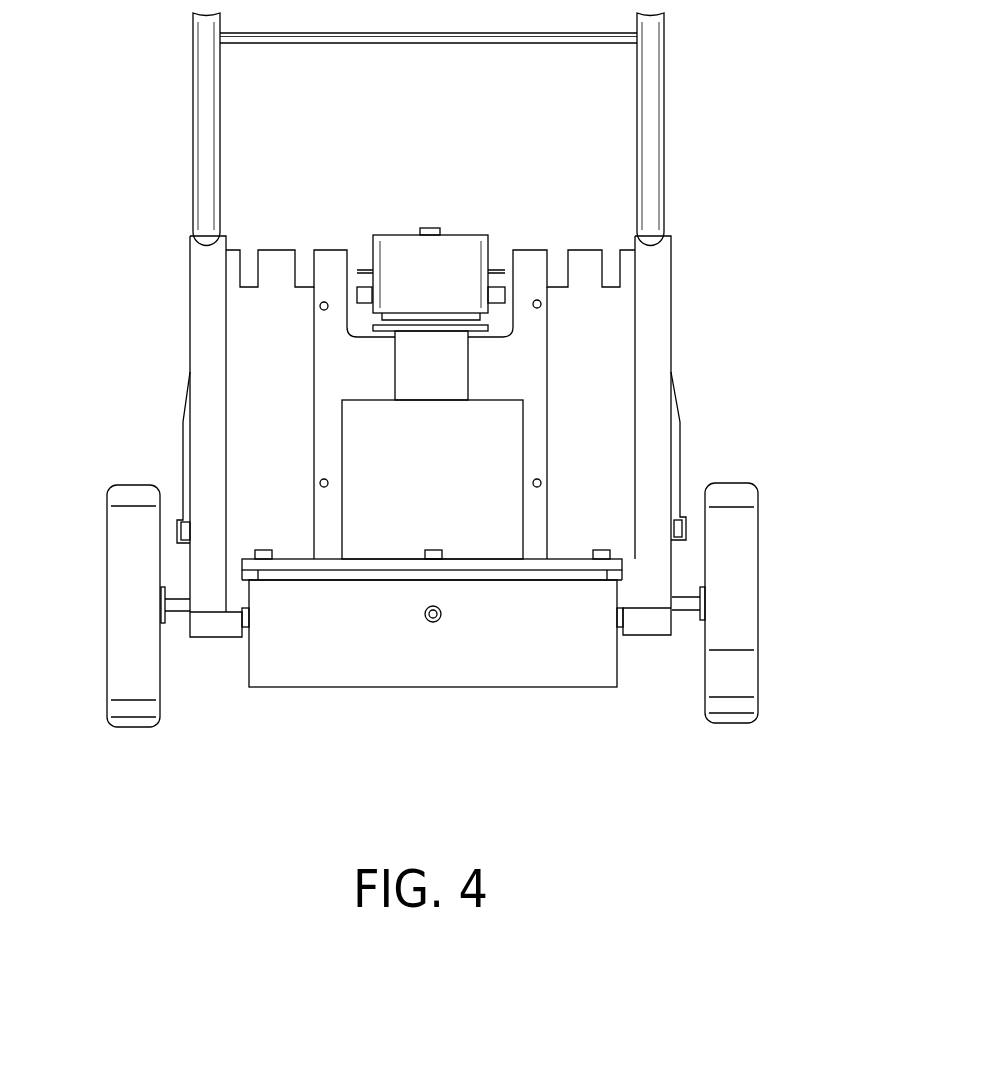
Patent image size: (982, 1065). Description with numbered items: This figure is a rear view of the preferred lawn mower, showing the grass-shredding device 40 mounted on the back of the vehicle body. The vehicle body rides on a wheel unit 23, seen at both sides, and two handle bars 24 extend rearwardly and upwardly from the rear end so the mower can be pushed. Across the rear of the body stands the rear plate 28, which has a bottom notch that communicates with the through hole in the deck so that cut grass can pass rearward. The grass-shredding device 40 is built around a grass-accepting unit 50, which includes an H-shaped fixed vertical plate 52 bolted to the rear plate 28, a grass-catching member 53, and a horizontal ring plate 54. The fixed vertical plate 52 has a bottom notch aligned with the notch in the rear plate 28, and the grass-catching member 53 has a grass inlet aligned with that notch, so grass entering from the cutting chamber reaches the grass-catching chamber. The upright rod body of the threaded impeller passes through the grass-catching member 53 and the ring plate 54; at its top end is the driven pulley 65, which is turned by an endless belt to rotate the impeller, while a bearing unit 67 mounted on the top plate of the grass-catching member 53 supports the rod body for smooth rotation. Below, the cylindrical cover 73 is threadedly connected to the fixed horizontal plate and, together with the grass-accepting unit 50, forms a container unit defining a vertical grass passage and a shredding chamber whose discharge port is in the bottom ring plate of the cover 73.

The wheel unit 23 is at (758, 658).
The handle bars 24 is at (665, 80).
The rear plate 28 is at (620, 313).
The grass-shredding device 40 is at (535, 243).
The grass-accepting unit 50 is at (305, 347).
The fixed vertical plate 52 is at (318, 298).
The grass-catching member 53 is at (342, 400).
The horizontal ring plate 54 is at (293, 563).
The driven pulley 65 is at (465, 242).
The bearing unit 67 is at (457, 380).
The cylindrical cover 73 is at (288, 673).